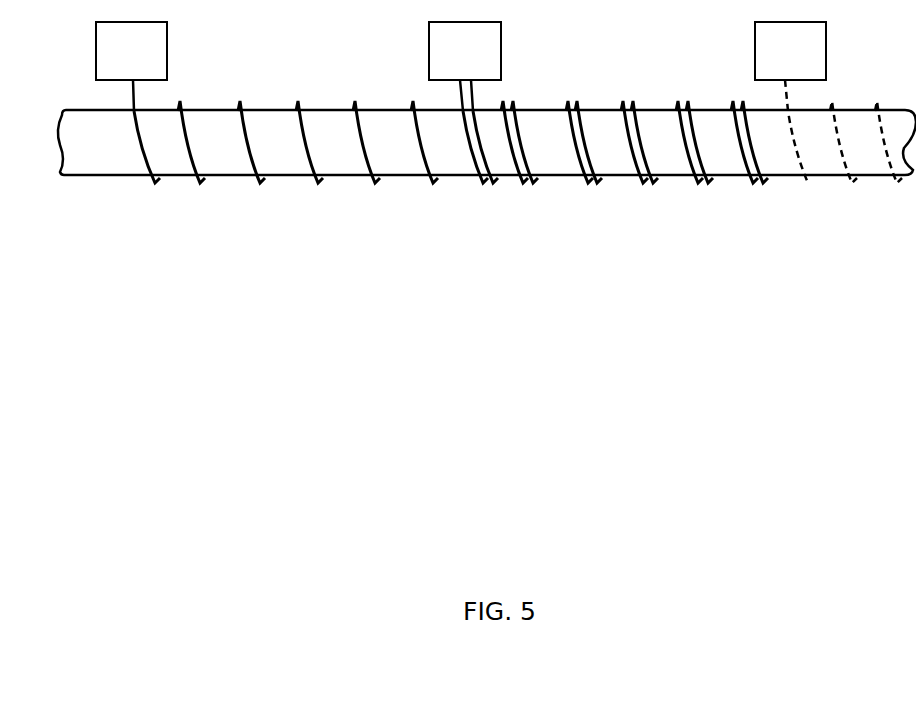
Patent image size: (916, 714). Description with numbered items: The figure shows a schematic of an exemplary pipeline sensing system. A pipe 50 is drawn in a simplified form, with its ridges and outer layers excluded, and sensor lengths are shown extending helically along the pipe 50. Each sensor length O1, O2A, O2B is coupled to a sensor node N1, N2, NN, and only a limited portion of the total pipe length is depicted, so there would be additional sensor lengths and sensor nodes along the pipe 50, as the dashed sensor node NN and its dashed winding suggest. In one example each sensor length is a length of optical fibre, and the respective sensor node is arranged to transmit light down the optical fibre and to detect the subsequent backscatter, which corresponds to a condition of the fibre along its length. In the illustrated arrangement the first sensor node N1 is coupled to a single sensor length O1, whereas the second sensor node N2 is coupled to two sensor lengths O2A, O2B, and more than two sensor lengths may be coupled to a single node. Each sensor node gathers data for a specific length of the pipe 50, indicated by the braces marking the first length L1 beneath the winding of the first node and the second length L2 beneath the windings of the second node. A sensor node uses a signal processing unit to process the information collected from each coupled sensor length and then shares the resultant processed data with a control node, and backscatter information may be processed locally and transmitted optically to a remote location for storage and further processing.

The pipe 50 is at (487, 142).
The first sensor node N1 is at (131, 66).
The second sensor node N2 is at (465, 66).
The sensor node NN is at (790, 102).
The sensor length O1 is at (135, 100).
The sensor length O2A is at (460, 88).
The sensor length O2B is at (474, 100).
The specific length of the pipe L1 is at (132, 187).
The specific length of the pipe L2 is at (475, 187).